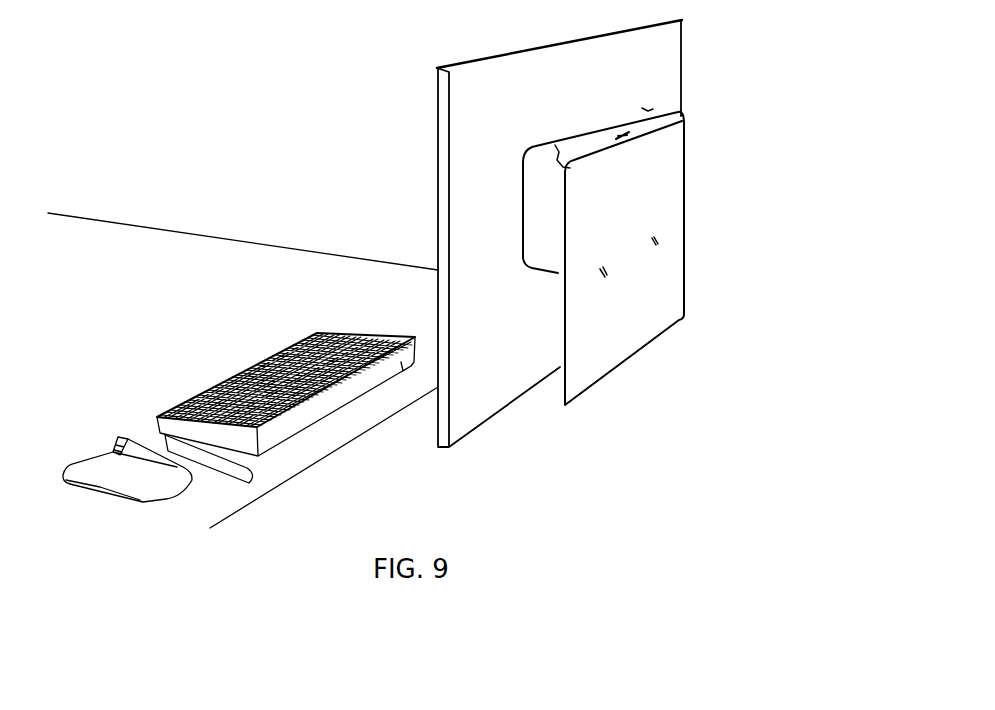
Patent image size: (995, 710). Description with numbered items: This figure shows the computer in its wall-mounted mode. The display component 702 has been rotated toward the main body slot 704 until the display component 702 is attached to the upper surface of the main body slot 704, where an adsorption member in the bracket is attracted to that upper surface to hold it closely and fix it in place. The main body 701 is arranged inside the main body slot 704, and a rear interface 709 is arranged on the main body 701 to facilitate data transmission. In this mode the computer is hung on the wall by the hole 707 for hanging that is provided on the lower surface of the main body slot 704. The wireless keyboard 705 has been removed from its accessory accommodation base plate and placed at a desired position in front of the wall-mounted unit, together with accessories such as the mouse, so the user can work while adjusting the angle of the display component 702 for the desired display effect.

The main body 701 is at (684, 133).
The display component 702 is at (638, 64).
The main body slot 704 is at (653, 109).
The keyboard 705 is at (272, 360).
The hole for hanging 707 is at (608, 270).
The rear interface 709 is at (633, 138).